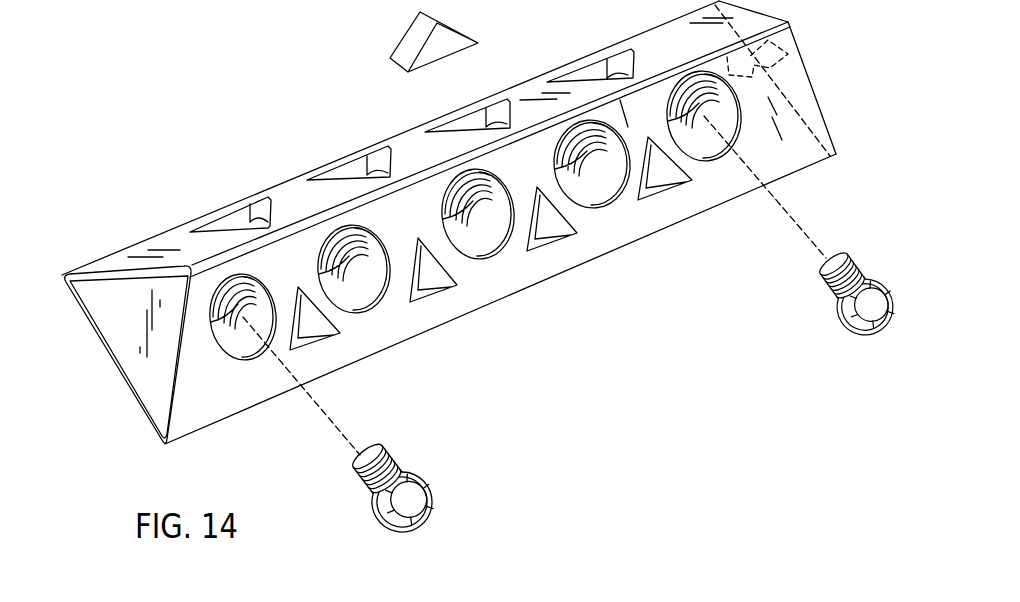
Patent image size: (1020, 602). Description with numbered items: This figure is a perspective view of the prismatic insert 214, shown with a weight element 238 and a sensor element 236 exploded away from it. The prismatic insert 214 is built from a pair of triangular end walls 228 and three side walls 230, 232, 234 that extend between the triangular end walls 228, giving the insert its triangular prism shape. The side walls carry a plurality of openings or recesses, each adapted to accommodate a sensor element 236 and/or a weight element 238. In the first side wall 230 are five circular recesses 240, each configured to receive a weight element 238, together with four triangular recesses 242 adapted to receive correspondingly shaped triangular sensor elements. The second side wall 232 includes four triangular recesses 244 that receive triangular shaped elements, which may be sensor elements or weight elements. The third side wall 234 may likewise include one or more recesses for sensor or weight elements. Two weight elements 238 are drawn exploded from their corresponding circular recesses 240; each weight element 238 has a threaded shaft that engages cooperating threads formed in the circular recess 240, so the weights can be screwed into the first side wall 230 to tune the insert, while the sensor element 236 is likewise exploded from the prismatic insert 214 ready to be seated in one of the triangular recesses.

The prismatic insert 214 is at (163, 186).
The triangular end walls 228 is at (108, 322).
The first side wall 230 is at (798, 148).
The second side wall 232 is at (140, 247).
The third side wall 234 is at (121, 389).
The sensor element 236 is at (408, 32).
The weight element 238 is at (430, 484).
The circular recesses 240 is at (478, 228).
The triangular recesses 242 is at (671, 184).
The triangular recesses 244 is at (352, 170).